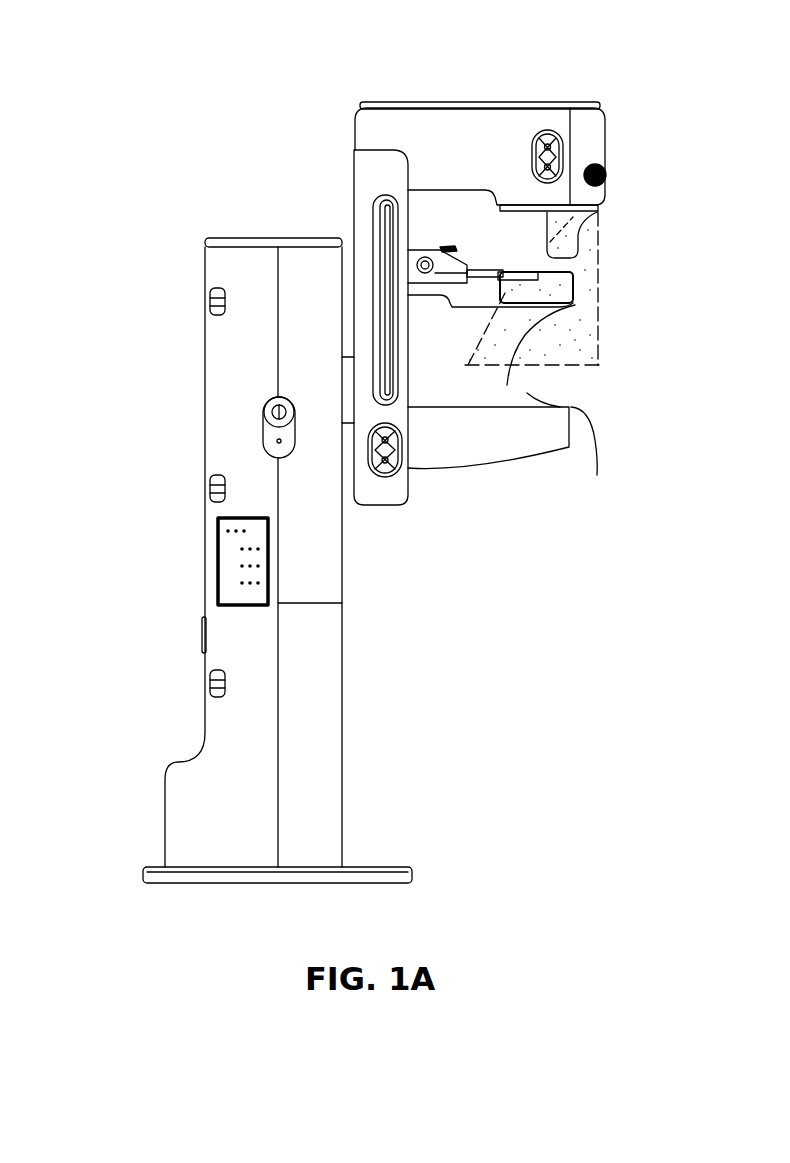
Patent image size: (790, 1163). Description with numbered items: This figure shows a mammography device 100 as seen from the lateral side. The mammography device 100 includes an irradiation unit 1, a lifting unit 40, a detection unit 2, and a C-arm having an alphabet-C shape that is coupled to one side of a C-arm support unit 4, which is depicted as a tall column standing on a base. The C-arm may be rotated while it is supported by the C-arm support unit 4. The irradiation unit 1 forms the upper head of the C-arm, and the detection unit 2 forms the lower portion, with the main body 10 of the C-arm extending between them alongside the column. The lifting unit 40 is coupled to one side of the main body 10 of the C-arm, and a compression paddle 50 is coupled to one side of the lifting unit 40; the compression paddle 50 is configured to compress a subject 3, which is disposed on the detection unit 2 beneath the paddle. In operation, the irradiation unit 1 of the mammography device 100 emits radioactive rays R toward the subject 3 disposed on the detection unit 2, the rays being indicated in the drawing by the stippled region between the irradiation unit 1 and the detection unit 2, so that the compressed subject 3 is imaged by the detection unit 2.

The mammography device 100 is at (150, 182).
The irradiation unit 1 is at (420, 127).
The main body 10 is at (375, 176).
The lifting unit 40 is at (416, 243).
The compression paddle 50 is at (487, 270).
The radioactive rays R is at (596, 300).
The subject 3 is at (538, 385).
The detection unit 2 is at (513, 455).
The C-arm support unit 4 is at (238, 348).